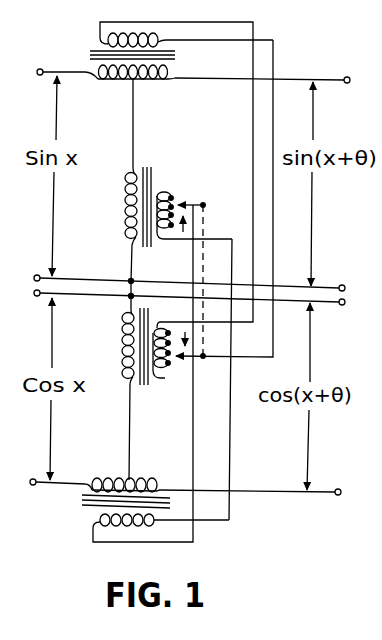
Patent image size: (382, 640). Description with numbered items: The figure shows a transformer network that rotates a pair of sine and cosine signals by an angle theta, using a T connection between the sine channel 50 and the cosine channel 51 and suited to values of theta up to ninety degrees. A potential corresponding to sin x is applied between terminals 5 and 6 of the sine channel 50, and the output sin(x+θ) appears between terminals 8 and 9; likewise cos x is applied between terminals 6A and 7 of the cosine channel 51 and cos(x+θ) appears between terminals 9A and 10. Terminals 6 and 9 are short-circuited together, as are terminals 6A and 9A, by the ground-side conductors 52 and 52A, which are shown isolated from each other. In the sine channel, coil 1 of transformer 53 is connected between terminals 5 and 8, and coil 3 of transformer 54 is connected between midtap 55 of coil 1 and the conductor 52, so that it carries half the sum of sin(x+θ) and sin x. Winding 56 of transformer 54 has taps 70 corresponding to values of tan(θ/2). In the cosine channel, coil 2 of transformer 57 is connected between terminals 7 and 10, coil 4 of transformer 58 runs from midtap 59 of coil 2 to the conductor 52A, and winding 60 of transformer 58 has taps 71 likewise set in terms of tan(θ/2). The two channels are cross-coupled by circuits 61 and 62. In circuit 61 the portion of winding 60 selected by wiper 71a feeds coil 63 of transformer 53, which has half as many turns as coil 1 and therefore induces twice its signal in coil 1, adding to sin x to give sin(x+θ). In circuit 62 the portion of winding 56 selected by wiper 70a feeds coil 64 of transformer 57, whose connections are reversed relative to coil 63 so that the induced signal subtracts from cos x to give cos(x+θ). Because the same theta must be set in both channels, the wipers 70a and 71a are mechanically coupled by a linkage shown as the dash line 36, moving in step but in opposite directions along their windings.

The coil 1 is at (170, 77).
The coil 2 is at (157, 481).
The coil 3 is at (125, 205).
The coil 4 is at (122, 346).
The terminal 5 is at (44, 68).
The terminal 6 is at (34, 275).
The terminal 6A is at (36, 297).
The terminal 7 is at (34, 485).
The terminal 8 is at (350, 77).
The terminal 9 is at (344, 285).
The terminal 9A is at (343, 305).
The terminal 10 is at (340, 495).
The dash line 36 is at (218, 274).
The sine channel 50 is at (105, 133).
The cosine channel 51 is at (95, 428).
The conductor 52 is at (78, 278).
The conductor 52A is at (75, 296).
The transformer 53 is at (180, 57).
The transformer 54 is at (143, 252).
The midtap 55 is at (134, 82).
The winding 56 is at (162, 191).
The transformer 57 is at (78, 503).
The transformer 58 is at (143, 390).
The midtap 59 is at (131, 478).
The winding 60 is at (158, 376).
The circuit 61 is at (241, 333).
The circuit 62 is at (229, 446).
The coil 63 is at (161, 37).
The coil 64 is at (133, 527).
The taps 70 is at (176, 193).
The wiper 70a is at (191, 205).
The taps 71 is at (173, 305).
The wiper 71a is at (186, 365).